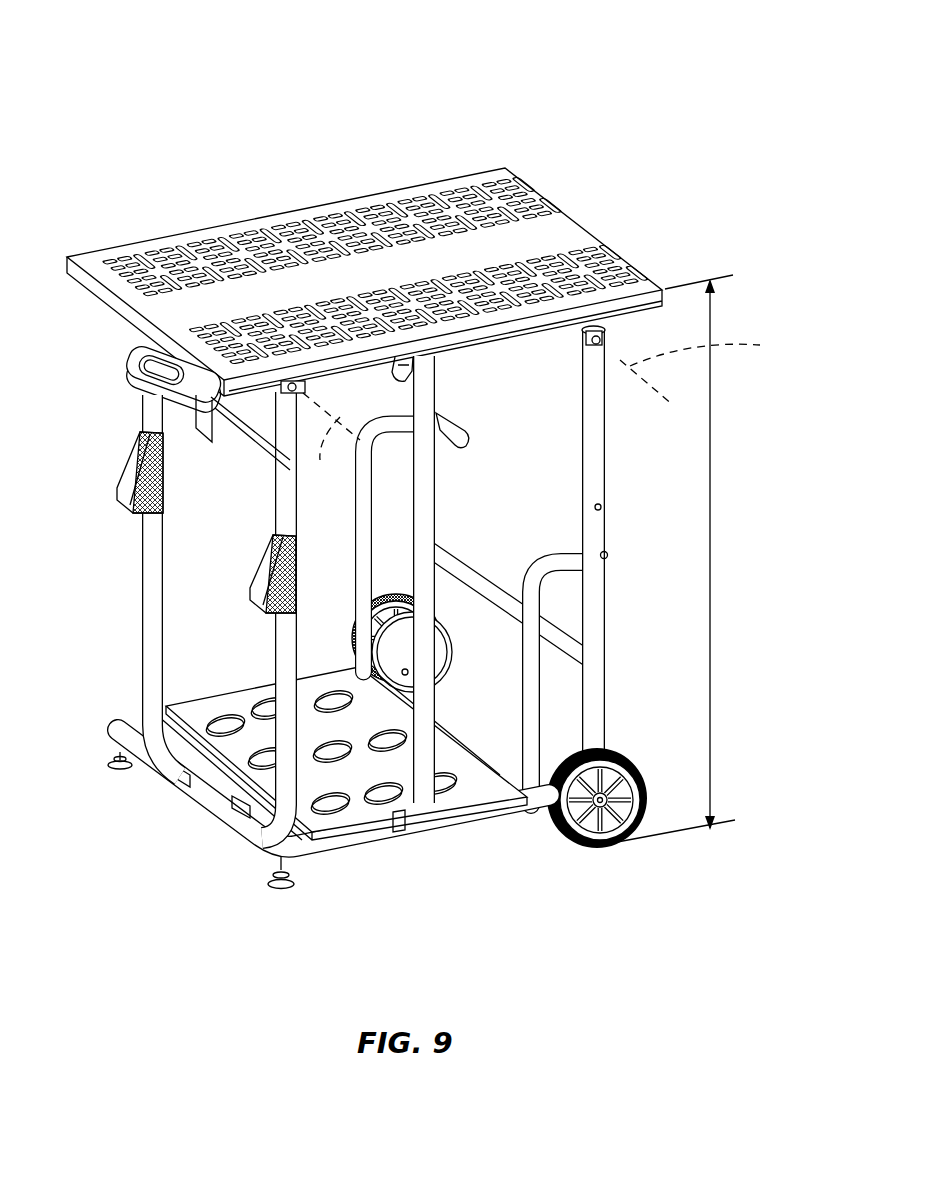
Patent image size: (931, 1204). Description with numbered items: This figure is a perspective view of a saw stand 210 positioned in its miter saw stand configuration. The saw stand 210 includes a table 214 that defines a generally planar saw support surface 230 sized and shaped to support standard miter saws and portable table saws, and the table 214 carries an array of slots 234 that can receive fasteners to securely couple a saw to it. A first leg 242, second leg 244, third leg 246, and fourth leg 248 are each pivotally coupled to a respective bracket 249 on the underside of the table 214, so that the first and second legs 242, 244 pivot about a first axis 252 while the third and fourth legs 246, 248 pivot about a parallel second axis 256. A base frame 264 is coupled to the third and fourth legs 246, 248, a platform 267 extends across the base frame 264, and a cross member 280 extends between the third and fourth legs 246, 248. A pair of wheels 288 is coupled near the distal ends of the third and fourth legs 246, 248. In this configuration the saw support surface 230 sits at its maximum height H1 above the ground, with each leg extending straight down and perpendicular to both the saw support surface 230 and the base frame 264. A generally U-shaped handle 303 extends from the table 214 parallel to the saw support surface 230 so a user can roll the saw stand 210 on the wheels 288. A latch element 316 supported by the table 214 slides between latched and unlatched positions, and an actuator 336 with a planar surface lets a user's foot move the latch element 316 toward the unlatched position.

The saw stand 210 is at (413, 504).
The table 214 is at (374, 245).
The saw support surface 230 is at (374, 245).
The array of slots 234 is at (298, 215).
The latch element 316 is at (406, 348).
The handle 303 is at (136, 392).
The bracket 249 is at (304, 389).
The first axis 252 is at (331, 449).
The second axis 256 is at (716, 370).
The third leg 246 is at (606, 434).
The fourth leg 248 is at (437, 500).
The cross member 280 is at (468, 575).
The second leg 244 is at (143, 565).
The first leg 242 is at (275, 653).
The actuator 336 is at (199, 432).
The wheels 288 is at (447, 678).
The platform 267 is at (427, 802).
The base frame 264 is at (345, 874).
The maximum height H1 is at (718, 545).